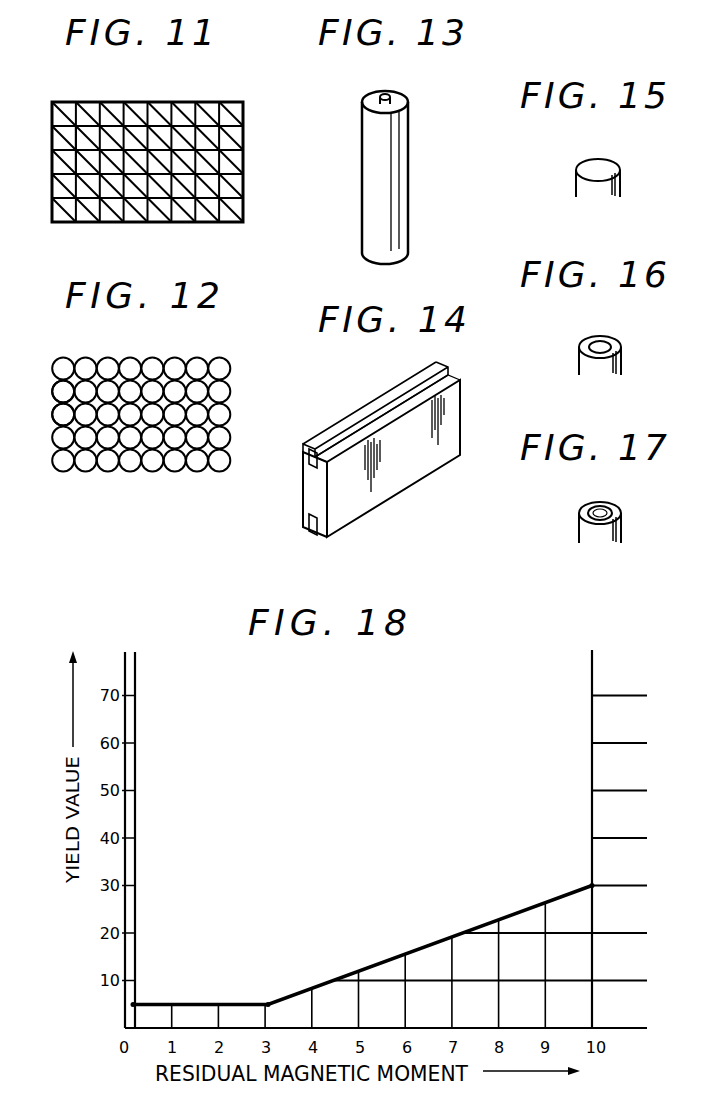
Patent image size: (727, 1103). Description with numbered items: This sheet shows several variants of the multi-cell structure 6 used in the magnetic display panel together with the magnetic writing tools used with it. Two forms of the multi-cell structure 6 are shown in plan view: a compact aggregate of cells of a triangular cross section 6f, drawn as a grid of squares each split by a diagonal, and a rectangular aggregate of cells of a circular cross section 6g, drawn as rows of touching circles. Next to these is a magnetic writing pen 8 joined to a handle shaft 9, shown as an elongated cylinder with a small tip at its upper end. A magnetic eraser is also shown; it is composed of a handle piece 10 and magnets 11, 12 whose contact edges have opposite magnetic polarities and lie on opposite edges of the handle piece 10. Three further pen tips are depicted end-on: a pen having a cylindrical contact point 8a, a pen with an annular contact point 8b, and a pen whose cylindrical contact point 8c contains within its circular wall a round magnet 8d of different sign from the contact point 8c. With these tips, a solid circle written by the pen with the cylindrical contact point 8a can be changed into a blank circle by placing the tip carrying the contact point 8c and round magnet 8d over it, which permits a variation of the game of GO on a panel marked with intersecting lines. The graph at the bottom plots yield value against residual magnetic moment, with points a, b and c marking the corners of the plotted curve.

In FIG. 11, the multi-cell structure 6 is at (237, 100).
In FIG. 12, the multi-cell structure 6 is at (212, 350).
In FIG. 11, the cells of a triangular cross section 6f is at (58, 166).
In FIG. 12, the cells of a circular cross section 6g is at (58, 416).
In FIG. 13, the magnetic writing pen 8 is at (392, 96).
In FIG. 13, the handle shaft 9 is at (396, 150).
In FIG. 15, the cylindrical contact point 8a is at (588, 165).
In FIG. 16, the annular contact point 8b is at (588, 338).
In FIG. 17, the cylindrical contact point 8c is at (590, 507).
In FIG. 17, the round magnet 8d is at (614, 507).
In FIG. 14, the handle piece 10 is at (401, 480).
In FIG. 14, the magnet 11 is at (334, 432).
In FIG. 14, the magnet 12 is at (313, 532).
In FIG. 18, the point a on yield value curve a is at (133, 1007).
In FIG. 18, the point b on yield value curve b is at (268, 1006).
In FIG. 18, the point c on yield value curve c is at (594, 888).